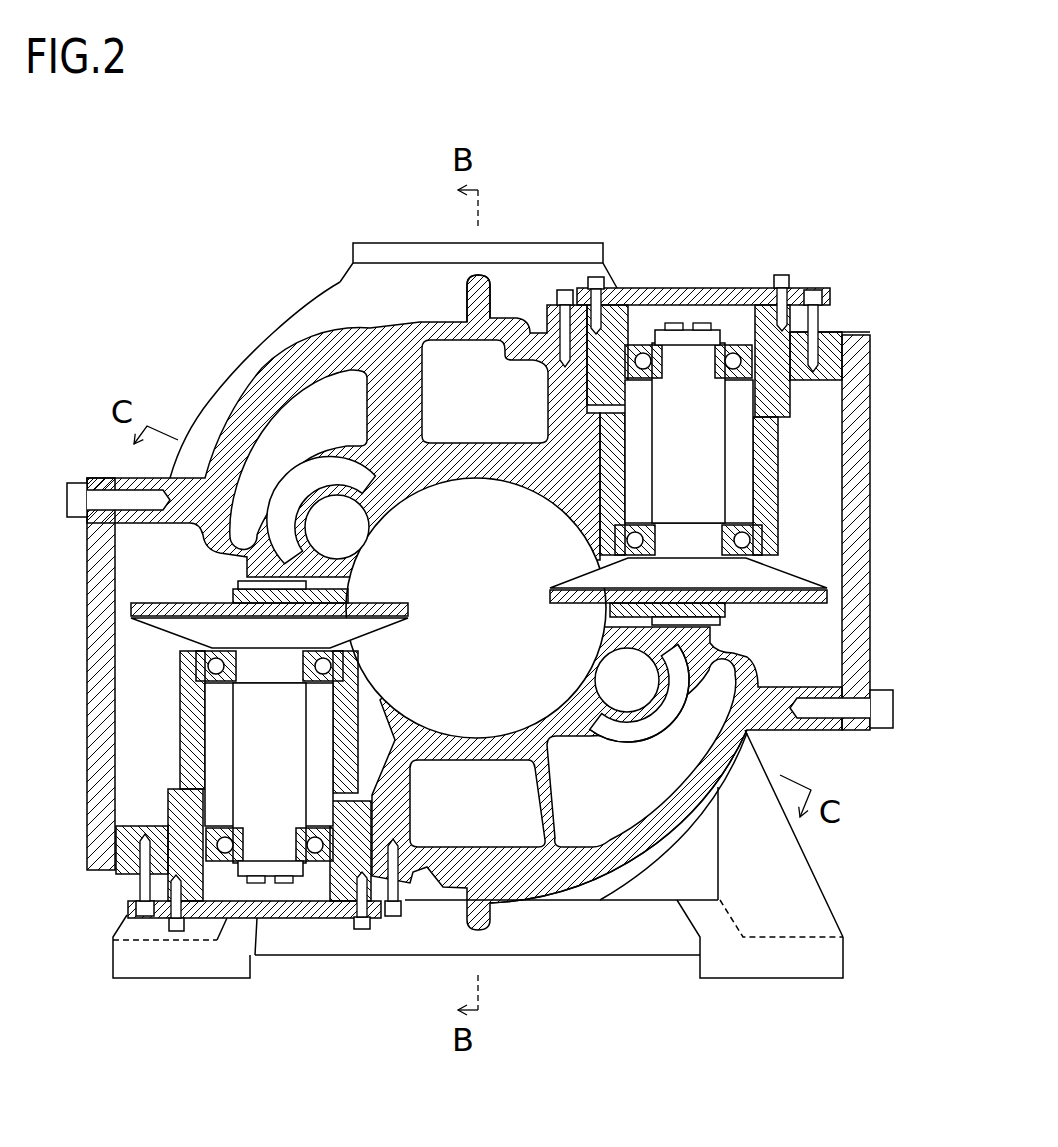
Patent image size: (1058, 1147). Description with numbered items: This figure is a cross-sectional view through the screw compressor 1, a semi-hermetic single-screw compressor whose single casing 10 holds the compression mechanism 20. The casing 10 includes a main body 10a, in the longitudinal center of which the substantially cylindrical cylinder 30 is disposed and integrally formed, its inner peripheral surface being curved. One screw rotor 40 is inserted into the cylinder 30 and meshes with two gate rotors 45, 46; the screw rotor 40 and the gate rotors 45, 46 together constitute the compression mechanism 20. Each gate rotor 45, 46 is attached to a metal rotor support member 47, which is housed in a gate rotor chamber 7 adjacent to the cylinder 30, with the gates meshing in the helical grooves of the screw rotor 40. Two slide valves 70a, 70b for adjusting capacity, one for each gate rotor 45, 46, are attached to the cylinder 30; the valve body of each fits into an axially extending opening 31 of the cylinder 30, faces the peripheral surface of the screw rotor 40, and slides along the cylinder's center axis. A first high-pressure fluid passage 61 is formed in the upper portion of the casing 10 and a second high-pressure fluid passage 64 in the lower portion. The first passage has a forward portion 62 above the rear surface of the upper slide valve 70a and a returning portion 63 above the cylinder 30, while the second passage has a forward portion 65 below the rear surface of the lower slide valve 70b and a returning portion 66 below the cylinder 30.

The screw compressor 1 is at (741, 185).
The gate rotor chamber 7 is at (133, 540).
The casing 10 is at (510, 316).
The main body 10a is at (740, 800).
The compression mechanism 20 is at (448, 878).
The cylinder 30 is at (500, 447).
The opening 31 is at (437, 442).
The screw rotor 40 is at (408, 742).
The gate rotor 45 is at (245, 590).
The gate rotor 46 is at (807, 616).
The rotor support member 47 is at (788, 576).
The first high-pressure fluid passage 61 is at (310, 418).
The forward portion 62 is at (309, 423).
The returning portion 63 is at (447, 335).
The second high-pressure fluid passage 64 is at (585, 817).
The forward portion 65 is at (612, 815).
The returning portion 66 is at (476, 770).
The slide valve 70a is at (309, 483).
The slide valve 70b is at (690, 785).